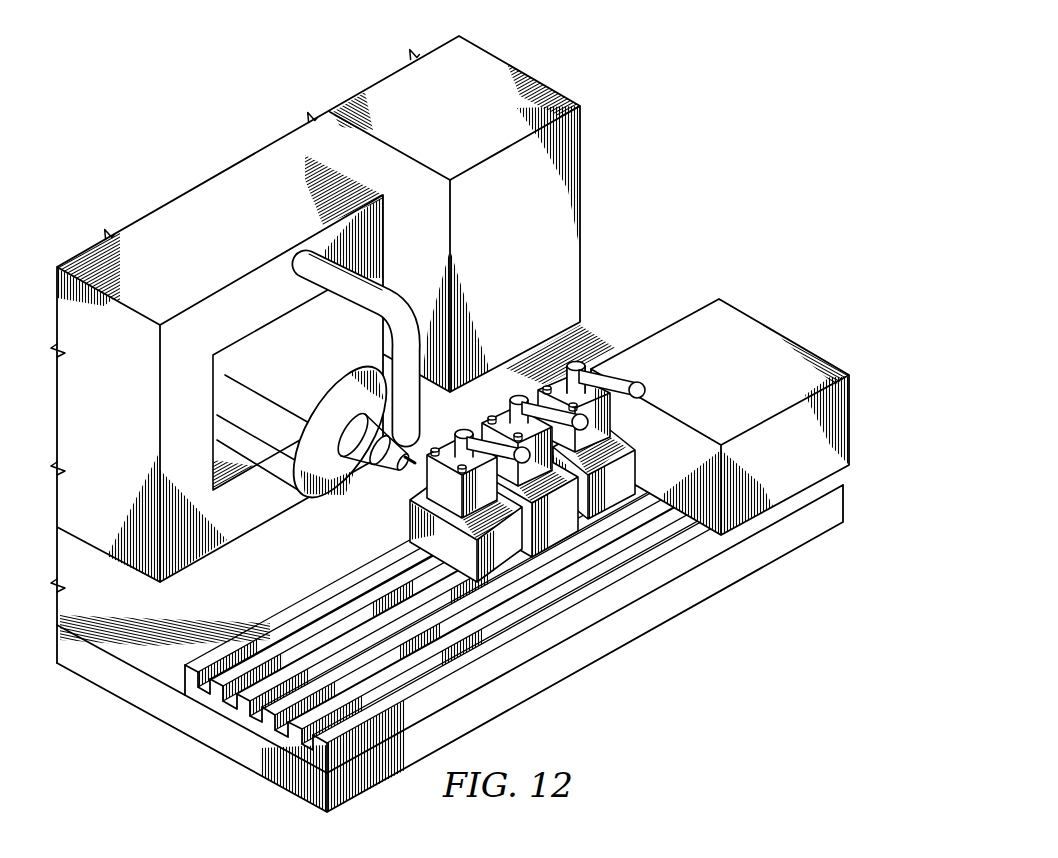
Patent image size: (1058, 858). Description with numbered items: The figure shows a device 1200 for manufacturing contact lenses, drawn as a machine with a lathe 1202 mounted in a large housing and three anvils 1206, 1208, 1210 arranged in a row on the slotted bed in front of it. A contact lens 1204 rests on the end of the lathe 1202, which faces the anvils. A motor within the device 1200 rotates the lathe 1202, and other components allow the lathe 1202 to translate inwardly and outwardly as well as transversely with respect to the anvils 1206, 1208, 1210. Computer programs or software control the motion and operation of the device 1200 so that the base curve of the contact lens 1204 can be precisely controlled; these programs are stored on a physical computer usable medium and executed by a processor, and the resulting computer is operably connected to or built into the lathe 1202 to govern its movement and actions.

The device 1200 is at (655, 123).
The lathe 1202 is at (325, 404).
The contact lens 1204 is at (408, 468).
The anvil 1206 is at (507, 557).
The anvil 1208 is at (557, 523).
The anvil 1210 is at (618, 477).